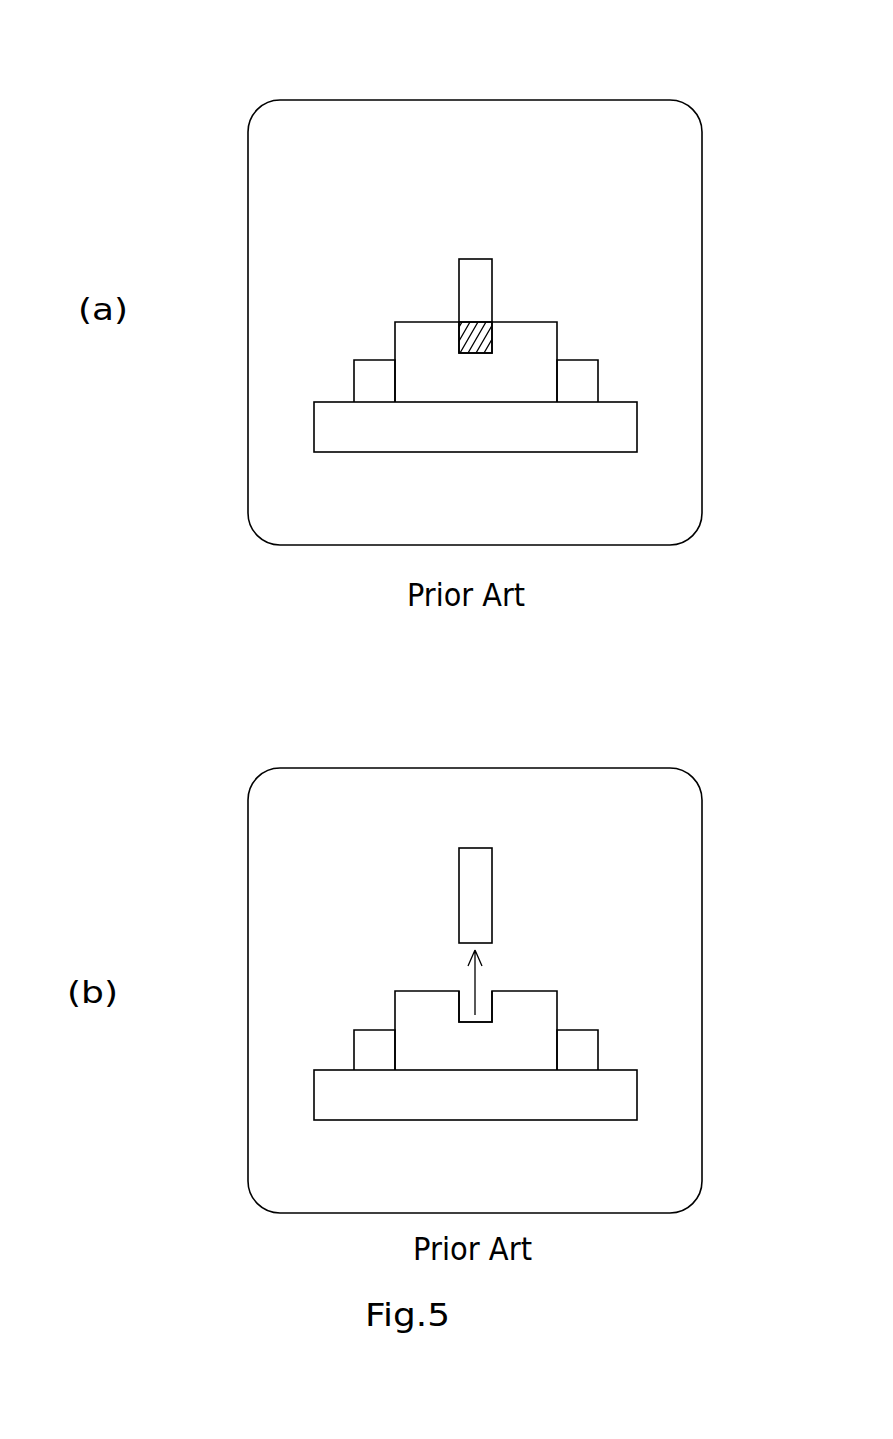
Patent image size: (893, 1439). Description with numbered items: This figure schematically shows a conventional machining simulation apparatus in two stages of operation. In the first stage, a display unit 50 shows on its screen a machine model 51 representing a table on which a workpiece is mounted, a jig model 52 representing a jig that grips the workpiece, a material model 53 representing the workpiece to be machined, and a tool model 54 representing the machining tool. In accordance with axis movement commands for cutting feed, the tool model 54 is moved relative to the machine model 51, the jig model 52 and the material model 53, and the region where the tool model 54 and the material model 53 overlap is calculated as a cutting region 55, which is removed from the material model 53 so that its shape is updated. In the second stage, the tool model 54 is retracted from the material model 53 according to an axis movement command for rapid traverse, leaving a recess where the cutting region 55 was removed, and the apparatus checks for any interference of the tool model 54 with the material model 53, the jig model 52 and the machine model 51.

The display unit 50 is at (478, 100).
The machine model 51 is at (620, 410).
The jig model 52 is at (368, 370).
The material model 53 is at (538, 333).
The tool model 54 is at (481, 258).
The cutting region 55 is at (474, 320).